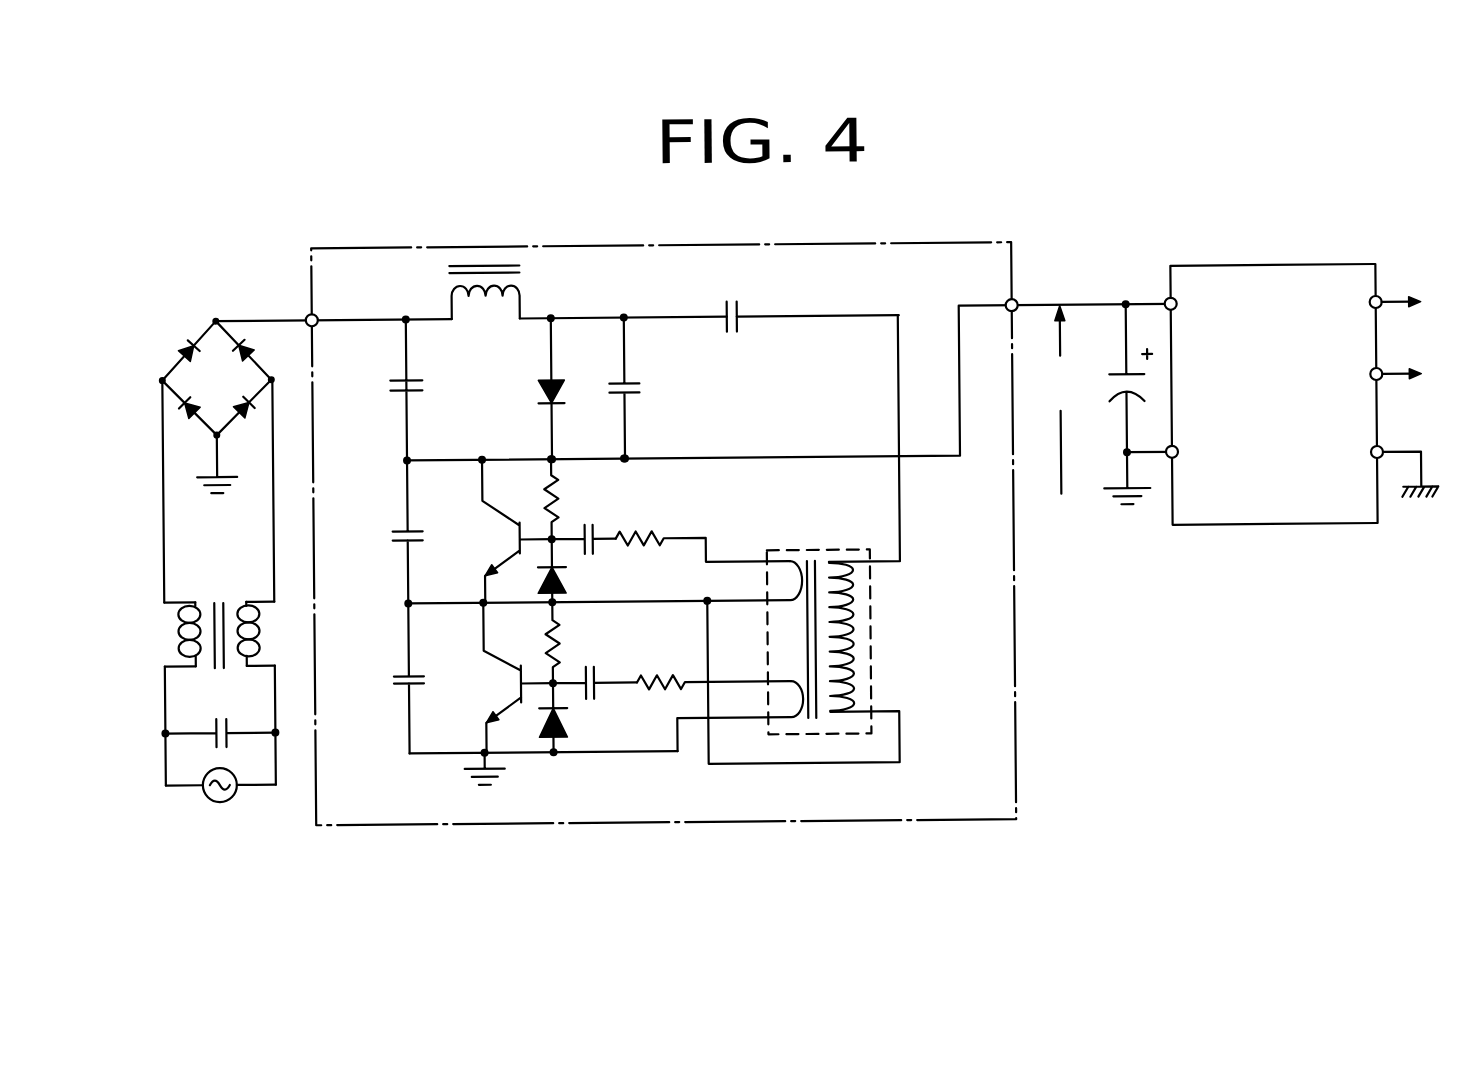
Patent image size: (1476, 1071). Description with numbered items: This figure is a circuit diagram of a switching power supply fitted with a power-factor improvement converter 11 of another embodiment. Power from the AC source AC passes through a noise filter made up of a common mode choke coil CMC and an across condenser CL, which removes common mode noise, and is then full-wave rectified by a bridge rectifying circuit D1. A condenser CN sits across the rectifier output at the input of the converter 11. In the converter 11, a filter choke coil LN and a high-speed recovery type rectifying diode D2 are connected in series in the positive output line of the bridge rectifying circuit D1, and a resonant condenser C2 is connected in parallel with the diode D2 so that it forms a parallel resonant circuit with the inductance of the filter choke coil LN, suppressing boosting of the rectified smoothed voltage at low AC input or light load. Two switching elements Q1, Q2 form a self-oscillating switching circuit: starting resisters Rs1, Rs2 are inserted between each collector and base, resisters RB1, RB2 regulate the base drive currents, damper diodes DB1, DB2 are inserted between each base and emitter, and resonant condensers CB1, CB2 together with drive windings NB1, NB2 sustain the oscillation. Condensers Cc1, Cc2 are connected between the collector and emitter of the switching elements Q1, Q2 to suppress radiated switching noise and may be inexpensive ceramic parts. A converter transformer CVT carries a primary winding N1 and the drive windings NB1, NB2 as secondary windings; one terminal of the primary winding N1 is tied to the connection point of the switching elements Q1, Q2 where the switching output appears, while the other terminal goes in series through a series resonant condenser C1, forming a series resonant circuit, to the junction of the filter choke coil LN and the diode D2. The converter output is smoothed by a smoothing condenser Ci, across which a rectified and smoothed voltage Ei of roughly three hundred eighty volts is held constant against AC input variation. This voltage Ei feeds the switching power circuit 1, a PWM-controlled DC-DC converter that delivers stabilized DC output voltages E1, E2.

The switching power circuit 1 is at (1274, 276).
The power-factor improvement converter 11 is at (408, 251).
The bridge rectifying circuit D1 is at (232, 395).
The common mode choke coil CMC is at (219, 616).
The across condenser CL is at (220, 721).
The AC power source AC is at (221, 804).
The condenser CN is at (382, 390).
The filter choke coil LN is at (484, 304).
The high-speed recovery type rectifying diode D2 is at (531, 389).
The resonant condenser C2 is at (640, 388).
The series resonant condenser C1 is at (738, 338).
The condenser Cc1 is at (425, 532).
The condenser Cc2 is at (426, 676).
The switching element Q1 is at (515, 531).
The switching element Q2 is at (508, 693).
The starting resister Rs1 is at (527, 499).
The starting resister Rs2 is at (528, 645).
The resonant condenser CB1 is at (586, 526).
The resonant condenser CB2 is at (595, 669).
The resister RB1 is at (702, 529).
The resister RB2 is at (714, 664).
The damper diode DB1 is at (578, 573).
The damper diode DB2 is at (579, 720).
The drive winding NB1 is at (774, 591).
The drive winding NB2 is at (782, 710).
The converter transformer CVT is at (819, 624).
The primary winding N1 is at (850, 636).
The smoothing condenser Ci is at (1131, 402).
The rectified and smoothed voltage Ei is at (1061, 400).
The DC output voltage E1 is at (1419, 302).
The DC output voltage E2 is at (1419, 374).